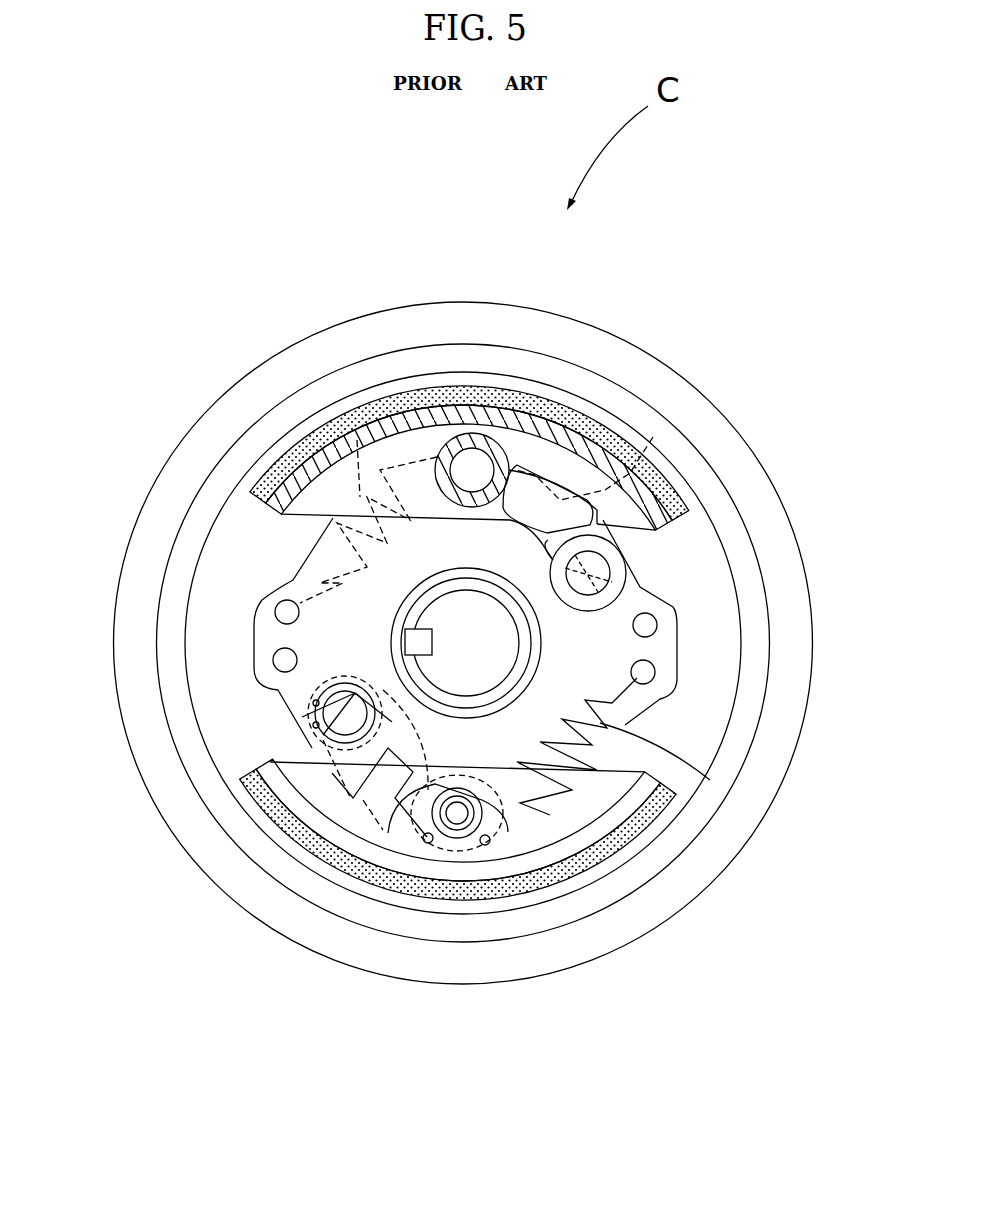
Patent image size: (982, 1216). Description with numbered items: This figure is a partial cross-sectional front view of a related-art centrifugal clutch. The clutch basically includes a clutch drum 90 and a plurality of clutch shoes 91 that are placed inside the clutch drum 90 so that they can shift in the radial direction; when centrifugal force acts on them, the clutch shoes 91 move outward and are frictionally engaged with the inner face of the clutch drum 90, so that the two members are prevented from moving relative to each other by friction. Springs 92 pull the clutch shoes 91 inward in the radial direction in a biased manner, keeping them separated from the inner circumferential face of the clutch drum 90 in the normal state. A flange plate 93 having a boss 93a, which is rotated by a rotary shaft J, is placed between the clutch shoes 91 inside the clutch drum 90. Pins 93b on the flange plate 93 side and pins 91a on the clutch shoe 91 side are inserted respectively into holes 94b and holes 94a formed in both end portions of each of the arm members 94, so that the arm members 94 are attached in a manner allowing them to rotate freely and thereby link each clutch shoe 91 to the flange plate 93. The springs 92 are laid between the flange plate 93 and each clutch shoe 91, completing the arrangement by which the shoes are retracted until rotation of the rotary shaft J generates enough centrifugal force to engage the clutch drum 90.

The clutch drum 90 is at (697, 463).
The clutch shoe 91 is at (592, 470).
The pin 91a is at (475, 458).
The spring 92 is at (653, 437).
The flange plate 93 is at (315, 642).
The boss 93a is at (400, 603).
The pin 93b is at (603, 583).
The arm member 94 is at (545, 458).
The hole 94a is at (463, 455).
The hole 94b is at (633, 565).
The rotary shaft J is at (480, 647).